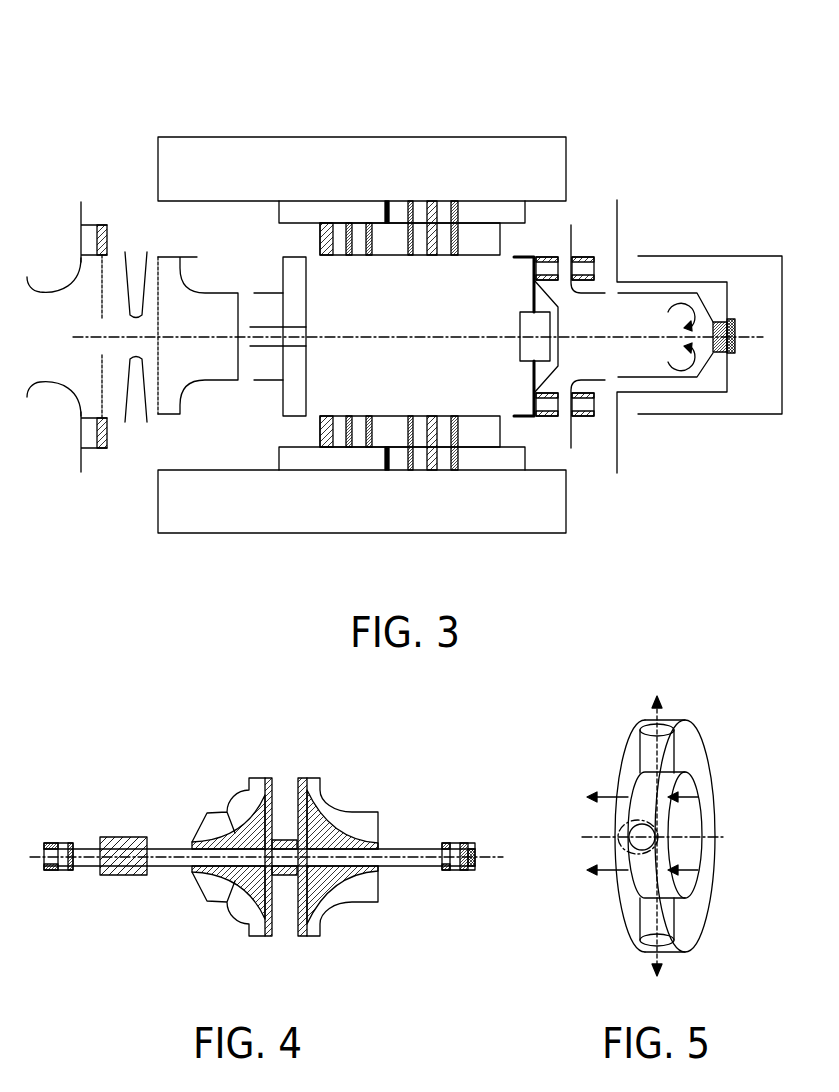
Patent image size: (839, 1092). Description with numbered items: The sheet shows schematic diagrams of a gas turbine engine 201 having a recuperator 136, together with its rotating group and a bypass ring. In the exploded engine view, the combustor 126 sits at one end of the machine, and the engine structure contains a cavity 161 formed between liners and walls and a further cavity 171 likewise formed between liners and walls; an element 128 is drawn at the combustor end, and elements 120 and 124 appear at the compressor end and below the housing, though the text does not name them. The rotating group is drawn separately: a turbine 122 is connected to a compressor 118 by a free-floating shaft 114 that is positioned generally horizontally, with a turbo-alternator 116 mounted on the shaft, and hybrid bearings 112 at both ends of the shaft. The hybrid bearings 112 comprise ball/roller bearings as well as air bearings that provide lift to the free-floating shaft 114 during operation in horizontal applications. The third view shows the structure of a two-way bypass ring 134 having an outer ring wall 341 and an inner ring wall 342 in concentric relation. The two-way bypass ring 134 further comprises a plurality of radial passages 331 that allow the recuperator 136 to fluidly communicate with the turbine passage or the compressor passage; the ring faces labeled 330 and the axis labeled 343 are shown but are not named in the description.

In FIG. 3, the gas turbine engine 201 is at (152, 96).
In FIG. 3, the recuperator 136 is at (278, 166).
In FIG. 3, the cavity 161 is at (338, 215).
In FIG. 3, the cavity 171 is at (480, 238).
In FIG. 3, the two-way bypass ring 134 is at (420, 240).
In FIG. 5, the two-way bypass ring 134 is at (717, 676).
In FIG. 3, the fuel injector / nozzle 128 is at (733, 318).
In FIG. 3, the combustor 126 is at (652, 368).
In FIG. 3, the compressor housing 120 is at (92, 463).
In FIG. 3, the bearing housing (lower) 124 is at (340, 452).
In FIG. 4, the compressor 118 is at (198, 823).
In FIG. 4, the turbine 122 is at (382, 823).
In FIG. 4, the hybrid bearings 112 is at (65, 873).
In FIG. 4, the turbo-alternator 116 is at (120, 878).
In FIG. 4, the free-floating shaft 114 is at (178, 867).
In FIG. 5, the ring outer face 330 is at (690, 740).
In FIG. 5, the radial passages 331 is at (638, 750).
In FIG. 5, the outer ring wall 341 is at (625, 888).
In FIG. 5, the inner ring wall 342 is at (690, 852).
In FIG. 5, the flow axis 343 is at (653, 713).